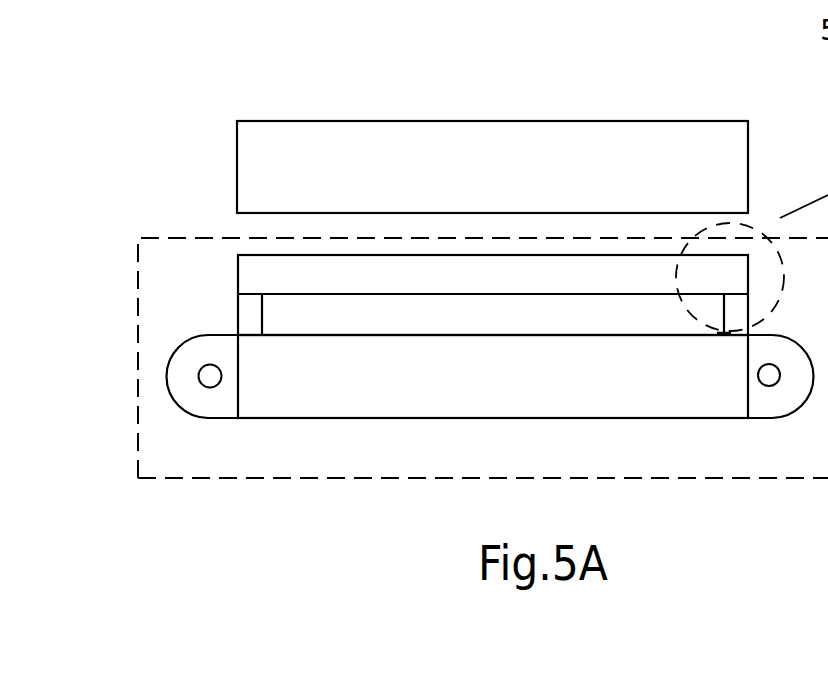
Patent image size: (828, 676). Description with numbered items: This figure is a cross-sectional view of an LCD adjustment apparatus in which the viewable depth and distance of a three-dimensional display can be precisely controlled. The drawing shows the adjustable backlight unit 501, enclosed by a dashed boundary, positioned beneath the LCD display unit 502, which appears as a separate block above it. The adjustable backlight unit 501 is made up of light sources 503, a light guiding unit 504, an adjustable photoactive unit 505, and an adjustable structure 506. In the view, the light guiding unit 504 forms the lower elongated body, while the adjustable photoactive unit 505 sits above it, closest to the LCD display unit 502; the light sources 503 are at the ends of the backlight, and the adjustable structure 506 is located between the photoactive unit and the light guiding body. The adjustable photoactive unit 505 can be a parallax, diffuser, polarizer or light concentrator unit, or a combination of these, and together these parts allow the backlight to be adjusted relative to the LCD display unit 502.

The adjustable backlight unit 501 is at (142, 237).
The LCD display unit 502 is at (540, 120).
The light sources 503 is at (200, 418).
The light guiding unit 504 is at (348, 418).
The adjustable photoactive unit 505 is at (255, 270).
The adjustable structure 506 is at (238, 313).